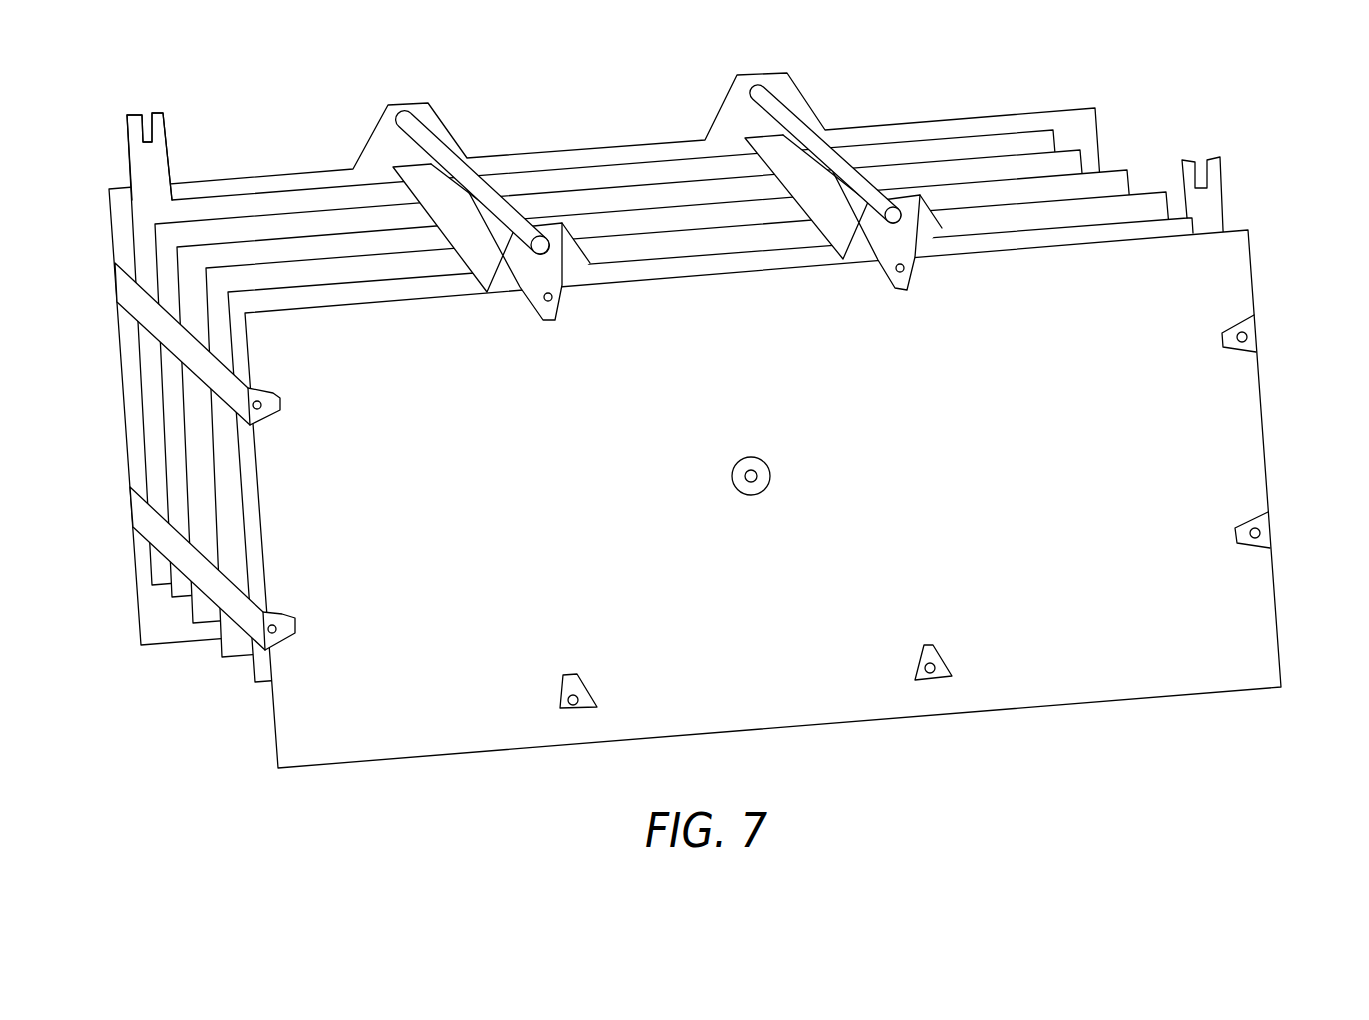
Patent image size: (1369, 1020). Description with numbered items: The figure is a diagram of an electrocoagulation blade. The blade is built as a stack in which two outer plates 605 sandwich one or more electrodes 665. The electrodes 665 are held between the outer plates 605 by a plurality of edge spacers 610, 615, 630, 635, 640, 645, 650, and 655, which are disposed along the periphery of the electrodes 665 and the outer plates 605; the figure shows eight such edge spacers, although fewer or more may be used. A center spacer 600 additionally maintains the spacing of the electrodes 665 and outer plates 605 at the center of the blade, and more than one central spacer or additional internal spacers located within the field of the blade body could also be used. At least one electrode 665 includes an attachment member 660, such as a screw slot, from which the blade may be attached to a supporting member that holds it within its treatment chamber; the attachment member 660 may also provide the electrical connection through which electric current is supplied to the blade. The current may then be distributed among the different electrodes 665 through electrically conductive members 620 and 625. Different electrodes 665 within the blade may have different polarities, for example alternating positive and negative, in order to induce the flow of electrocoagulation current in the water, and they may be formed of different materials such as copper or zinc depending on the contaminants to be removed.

The center spacer 600 is at (735, 481).
The outer plate 605 is at (414, 687).
The edge spacer 610 is at (128, 295).
The edge spacer 615 is at (143, 517).
The electrically conductive member 620 is at (450, 153).
The electrically conductive member 625 is at (793, 122).
The edge spacer 630 is at (582, 704).
The edge spacer 635 is at (938, 679).
The edge spacer 640 is at (1258, 332).
The edge spacer 645 is at (1263, 523).
The edge spacer 650 is at (543, 315).
The edge spacer 655 is at (897, 279).
The attachment member 660 is at (146, 112).
The electrode 665 is at (234, 672).